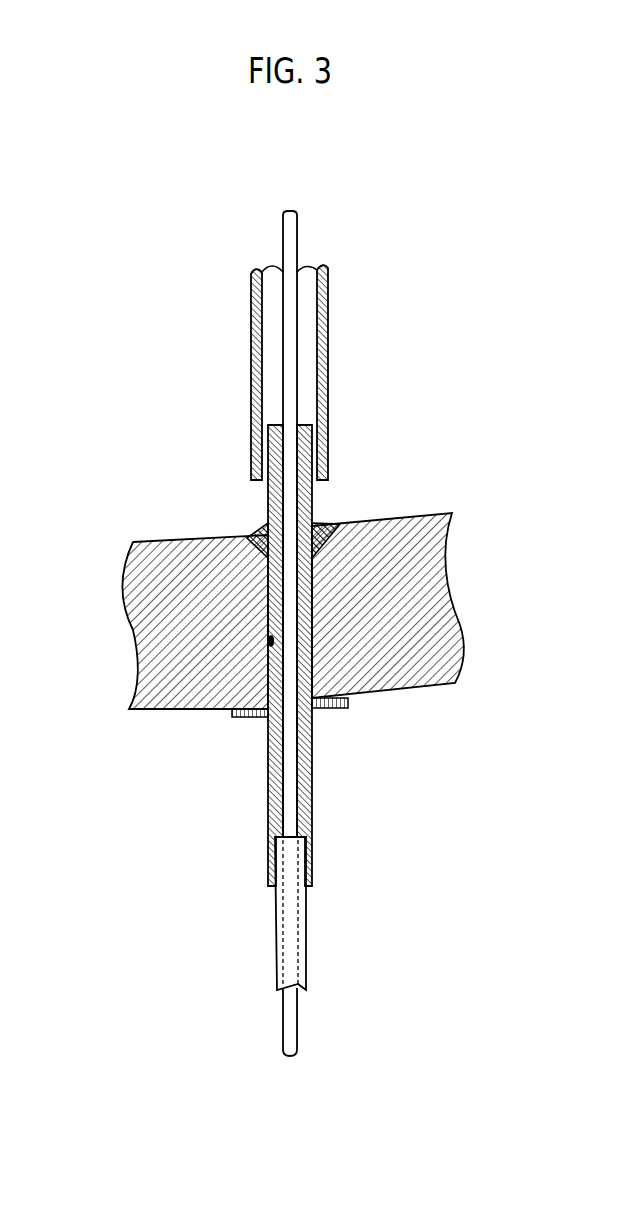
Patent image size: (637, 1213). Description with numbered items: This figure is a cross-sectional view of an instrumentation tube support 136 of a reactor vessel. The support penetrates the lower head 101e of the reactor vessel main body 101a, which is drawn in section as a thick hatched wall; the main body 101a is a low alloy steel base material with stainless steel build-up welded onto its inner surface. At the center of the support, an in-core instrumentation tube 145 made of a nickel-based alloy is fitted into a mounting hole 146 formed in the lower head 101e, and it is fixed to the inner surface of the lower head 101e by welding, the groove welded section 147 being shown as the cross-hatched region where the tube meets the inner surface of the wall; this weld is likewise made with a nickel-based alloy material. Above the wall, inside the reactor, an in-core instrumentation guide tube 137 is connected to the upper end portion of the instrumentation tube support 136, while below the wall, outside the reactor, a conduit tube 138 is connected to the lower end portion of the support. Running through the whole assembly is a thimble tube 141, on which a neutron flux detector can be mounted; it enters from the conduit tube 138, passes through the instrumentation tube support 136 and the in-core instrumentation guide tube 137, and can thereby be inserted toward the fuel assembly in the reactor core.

The reactor vessel main body 101a is at (153, 547).
The lower head 101e is at (427, 670).
The instrumentation tube support 136 is at (304, 575).
The in-core instrumentation guide tube 137 is at (328, 357).
The conduit tube 138 is at (277, 930).
The thimble tube 141 is at (298, 1023).
The in-core instrumentation tube 145 is at (270, 433).
The mounting hole 146 is at (268, 641).
The groove welded section 147 is at (257, 528).